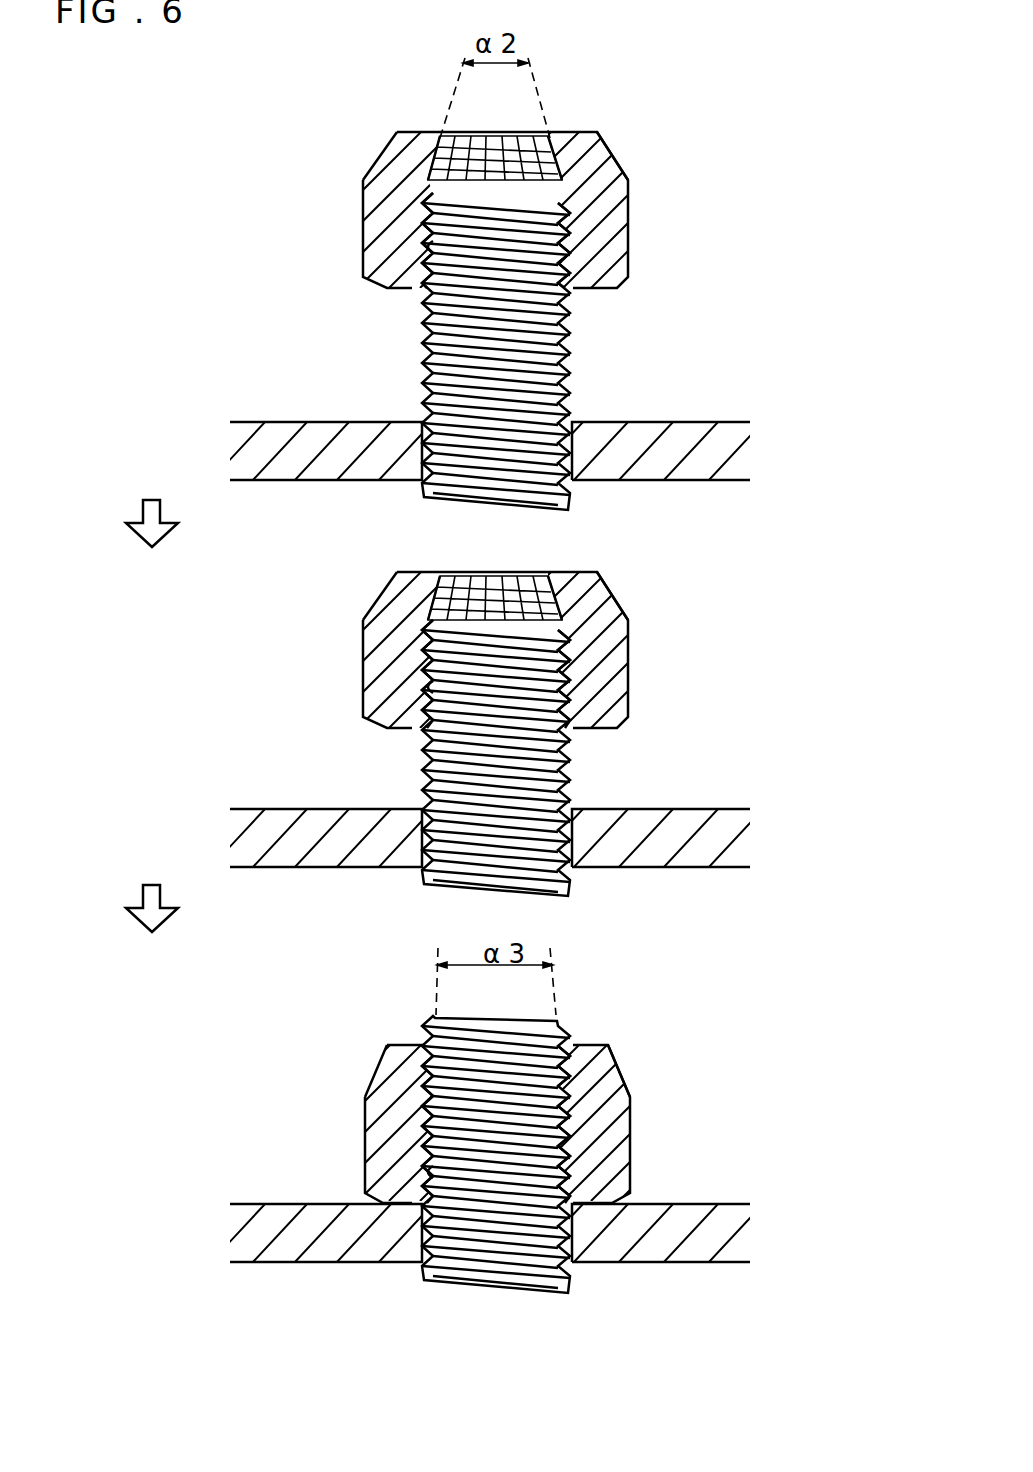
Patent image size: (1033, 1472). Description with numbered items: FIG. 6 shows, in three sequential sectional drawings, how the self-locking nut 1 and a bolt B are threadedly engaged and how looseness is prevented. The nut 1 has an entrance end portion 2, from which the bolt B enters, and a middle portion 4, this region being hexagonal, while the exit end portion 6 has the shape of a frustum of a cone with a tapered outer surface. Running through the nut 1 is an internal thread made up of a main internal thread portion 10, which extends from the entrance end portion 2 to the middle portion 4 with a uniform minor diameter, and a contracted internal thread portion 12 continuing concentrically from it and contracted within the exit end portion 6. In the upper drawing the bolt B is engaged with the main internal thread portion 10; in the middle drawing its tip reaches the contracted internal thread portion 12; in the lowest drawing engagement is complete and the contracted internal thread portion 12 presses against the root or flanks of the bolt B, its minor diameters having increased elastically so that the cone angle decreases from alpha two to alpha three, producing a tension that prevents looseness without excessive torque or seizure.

The self-locking nut 1 is at (670, 125).
The entrance end portion 2 is at (358, 268).
The middle portion 4 is at (357, 208).
The exit end portion 6 is at (378, 145).
The main internal thread portion 10 is at (427, 247).
The contracted internal thread portion 12 is at (423, 173).
The bolt B is at (582, 372).